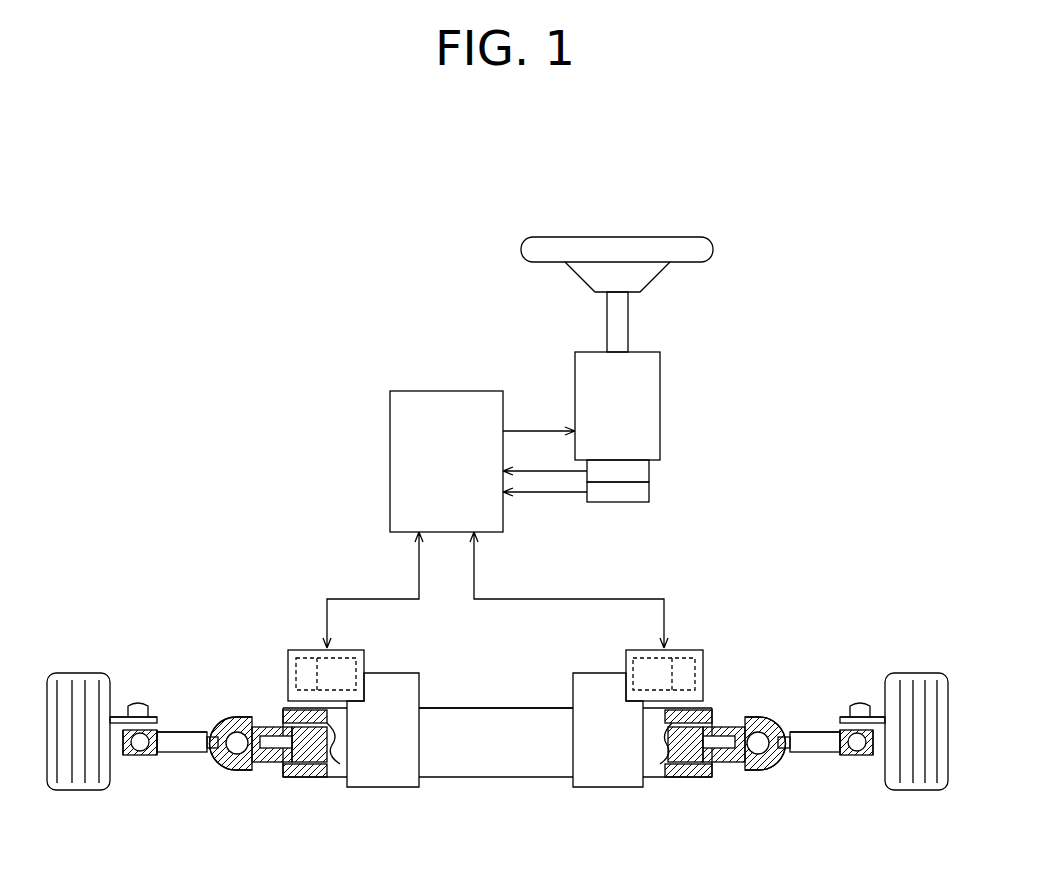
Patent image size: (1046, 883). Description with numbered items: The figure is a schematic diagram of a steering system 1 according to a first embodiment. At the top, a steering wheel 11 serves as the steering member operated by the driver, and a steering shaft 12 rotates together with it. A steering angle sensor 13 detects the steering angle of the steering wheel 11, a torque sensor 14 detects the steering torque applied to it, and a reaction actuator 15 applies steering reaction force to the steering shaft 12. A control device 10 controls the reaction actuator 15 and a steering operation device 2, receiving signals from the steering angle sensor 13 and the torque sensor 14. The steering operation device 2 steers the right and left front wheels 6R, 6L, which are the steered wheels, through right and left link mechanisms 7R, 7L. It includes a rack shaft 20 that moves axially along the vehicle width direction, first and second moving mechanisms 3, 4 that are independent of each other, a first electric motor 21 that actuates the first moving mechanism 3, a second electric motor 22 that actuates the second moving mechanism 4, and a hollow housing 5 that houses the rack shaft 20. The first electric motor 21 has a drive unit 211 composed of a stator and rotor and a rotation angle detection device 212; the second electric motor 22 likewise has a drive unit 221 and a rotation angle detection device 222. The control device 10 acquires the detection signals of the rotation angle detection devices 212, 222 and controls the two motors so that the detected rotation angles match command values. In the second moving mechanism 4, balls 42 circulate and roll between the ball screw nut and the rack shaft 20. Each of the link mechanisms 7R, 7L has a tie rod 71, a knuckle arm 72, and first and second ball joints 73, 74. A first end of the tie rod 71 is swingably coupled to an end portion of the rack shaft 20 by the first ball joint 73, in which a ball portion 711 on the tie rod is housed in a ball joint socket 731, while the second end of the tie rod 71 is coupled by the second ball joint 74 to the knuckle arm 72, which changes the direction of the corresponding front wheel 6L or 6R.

The steering system 1 is at (742, 228).
The steering operation device 2 is at (511, 804).
The first moving mechanism 3 is at (400, 673).
The second moving mechanism 4 is at (583, 673).
The housing 5 is at (493, 708).
The left front wheel 6L is at (68, 673).
The right front wheel 6R is at (932, 673).
The left link mechanism 7L is at (187, 691).
The right link mechanism 7R is at (808, 690).
The control device 10 is at (418, 391).
The steering wheel 11 is at (608, 237).
The steering shaft 12 is at (630, 325).
The steering angle sensor 13 is at (650, 473).
The torque sensor 14 is at (650, 495).
The reaction actuator 15 is at (660, 381).
The rack shaft 20 is at (323, 748).
The first electric motor 21 is at (305, 650).
The second electric motor 22 is at (688, 650).
The balls 42 is at (675, 748).
The tie rod 71 is at (180, 752).
The knuckle arm 72 is at (122, 717).
The first ball joint 73 is at (262, 776).
The second ball joint 74 is at (120, 772).
The drive unit 211 is at (345, 658).
The rotation angle detection device 212 is at (296, 665).
The drive unit 221 is at (644, 658).
The rotation angle detection device 222 is at (697, 665).
The ball portion 711 is at (235, 748).
The ball joint socket 731 is at (240, 717).